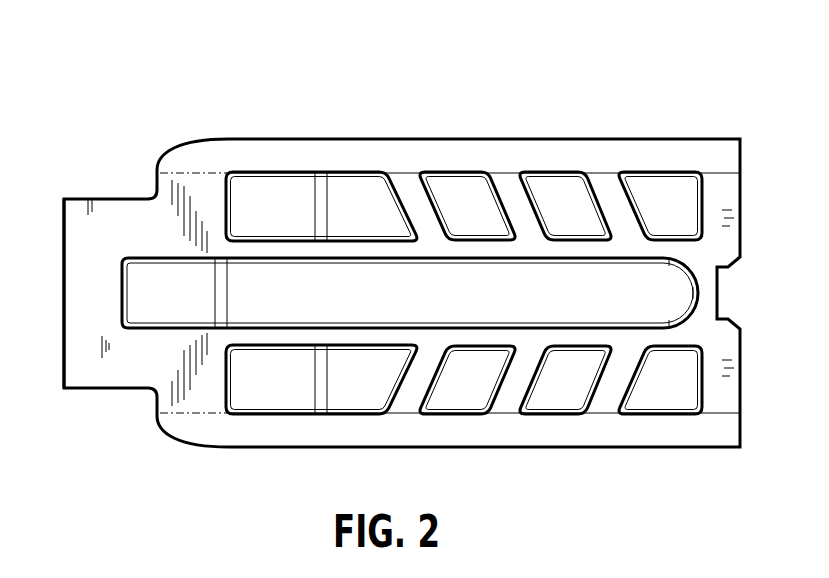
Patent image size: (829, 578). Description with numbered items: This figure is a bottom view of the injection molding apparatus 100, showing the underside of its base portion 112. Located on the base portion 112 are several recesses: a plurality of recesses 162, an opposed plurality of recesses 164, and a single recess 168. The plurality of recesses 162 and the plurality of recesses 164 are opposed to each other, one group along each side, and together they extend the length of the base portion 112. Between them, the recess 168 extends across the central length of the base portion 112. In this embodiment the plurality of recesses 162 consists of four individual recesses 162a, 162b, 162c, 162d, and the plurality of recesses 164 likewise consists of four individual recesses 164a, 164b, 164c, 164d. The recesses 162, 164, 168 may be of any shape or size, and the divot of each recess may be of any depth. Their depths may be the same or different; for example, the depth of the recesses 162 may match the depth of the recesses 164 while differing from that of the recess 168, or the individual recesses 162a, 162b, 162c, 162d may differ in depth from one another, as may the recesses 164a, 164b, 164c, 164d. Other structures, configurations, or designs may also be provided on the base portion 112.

The injection molding apparatus 100 is at (677, 81).
The base portion 112 is at (112, 378).
The recess 168 is at (128, 257).
The plurality of recesses 162 is at (464, 169).
The recess 162a is at (633, 171).
The recess 162b is at (530, 171).
The recess 162c is at (448, 171).
The recess 162d is at (287, 171).
The plurality of recesses 164 is at (464, 423).
The recess 164a is at (643, 415).
The recess 164b is at (548, 415).
The recess 164c is at (437, 415).
The recess 164d is at (338, 415).